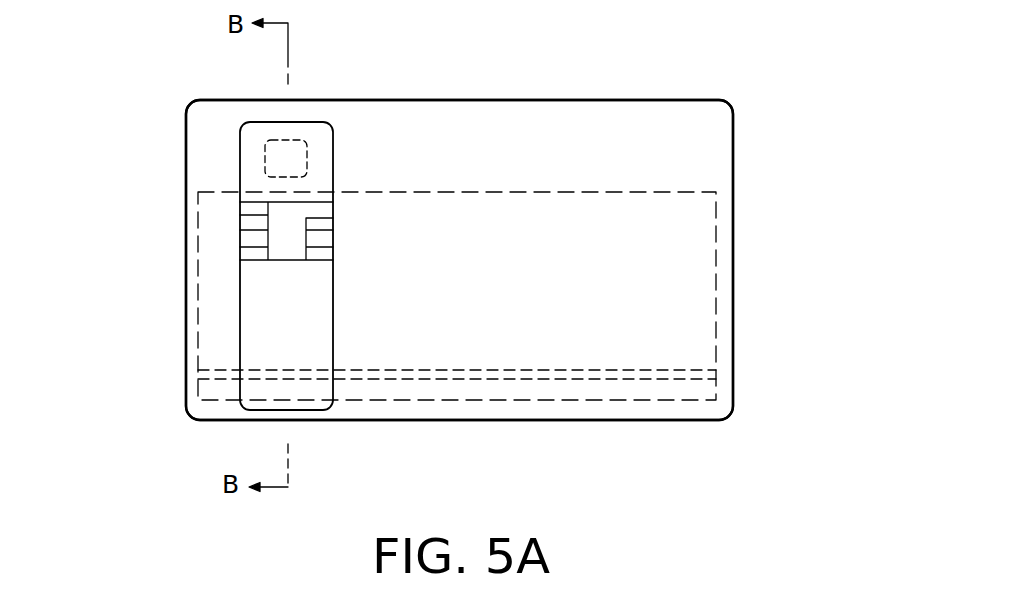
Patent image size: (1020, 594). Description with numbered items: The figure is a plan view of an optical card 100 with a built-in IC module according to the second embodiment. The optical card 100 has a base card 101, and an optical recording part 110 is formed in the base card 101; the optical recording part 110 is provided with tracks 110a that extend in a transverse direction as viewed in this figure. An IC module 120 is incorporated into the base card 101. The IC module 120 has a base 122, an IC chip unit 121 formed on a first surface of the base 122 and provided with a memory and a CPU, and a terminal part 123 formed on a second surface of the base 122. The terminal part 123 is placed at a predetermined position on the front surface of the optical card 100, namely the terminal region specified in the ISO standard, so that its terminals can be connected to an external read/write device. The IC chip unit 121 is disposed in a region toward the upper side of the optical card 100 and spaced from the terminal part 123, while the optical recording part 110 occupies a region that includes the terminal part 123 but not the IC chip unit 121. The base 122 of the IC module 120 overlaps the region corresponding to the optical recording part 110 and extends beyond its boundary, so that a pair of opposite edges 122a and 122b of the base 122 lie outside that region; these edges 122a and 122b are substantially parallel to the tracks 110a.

The optical card 100 is at (561, 89).
The base card 101 is at (734, 283).
The optical recording part 110 is at (640, 400).
The tracks 110a is at (678, 366).
The IC module 120 is at (102, 93).
The IC chip unit 121 is at (266, 157).
The base 122 is at (240, 177).
The edge 122a is at (302, 123).
The edge 122b is at (325, 410).
The terminal part 123 is at (252, 223).